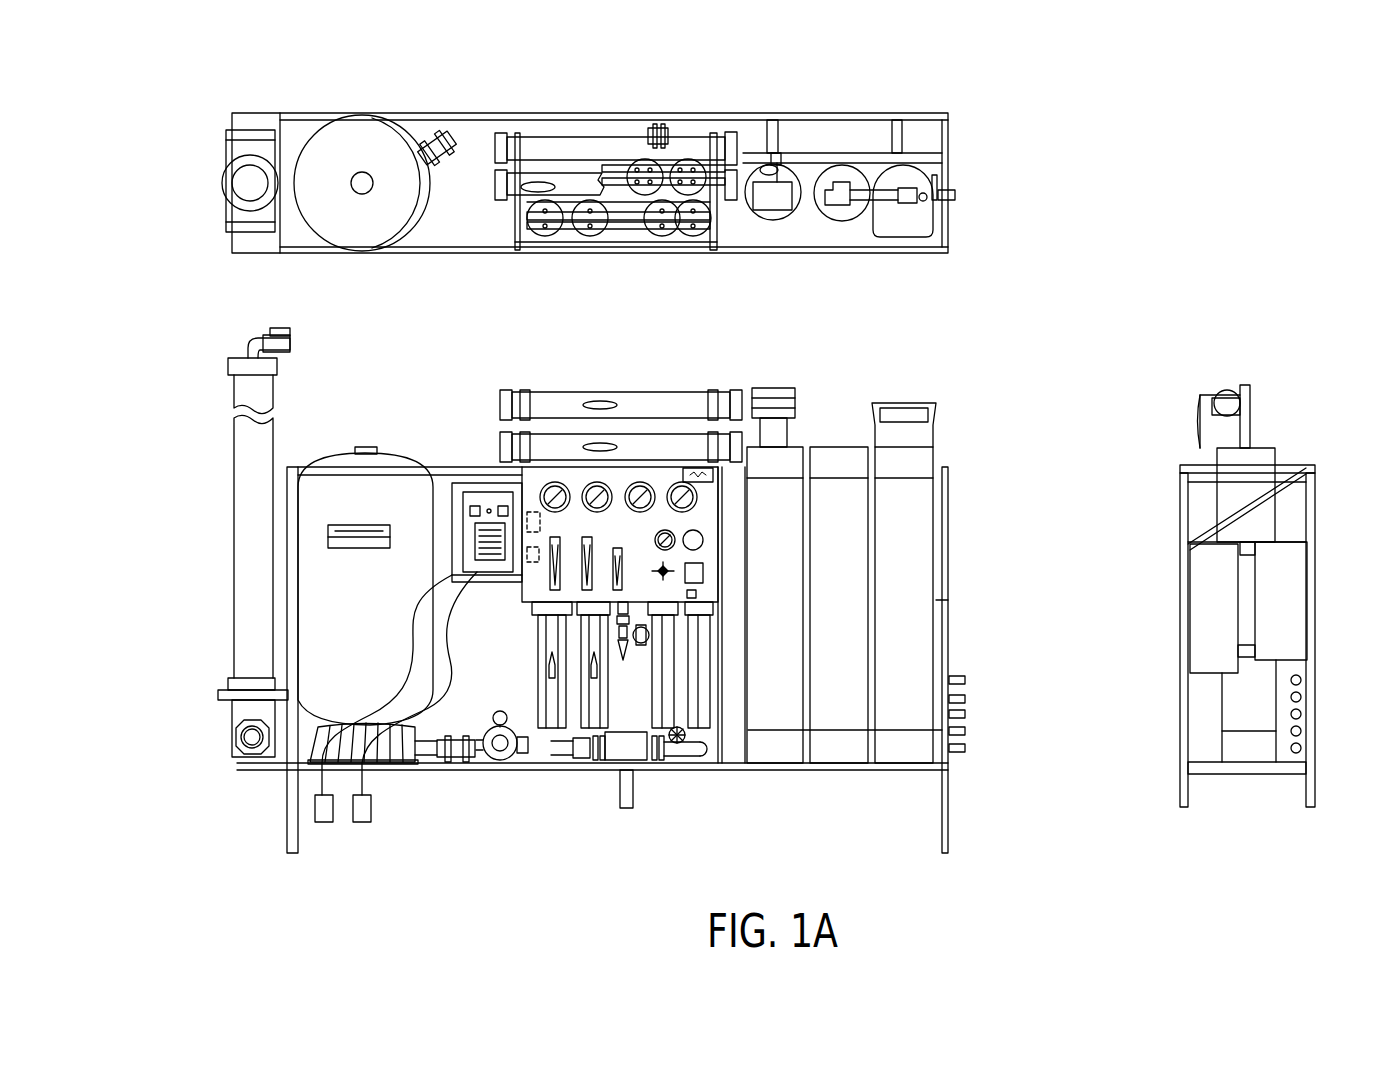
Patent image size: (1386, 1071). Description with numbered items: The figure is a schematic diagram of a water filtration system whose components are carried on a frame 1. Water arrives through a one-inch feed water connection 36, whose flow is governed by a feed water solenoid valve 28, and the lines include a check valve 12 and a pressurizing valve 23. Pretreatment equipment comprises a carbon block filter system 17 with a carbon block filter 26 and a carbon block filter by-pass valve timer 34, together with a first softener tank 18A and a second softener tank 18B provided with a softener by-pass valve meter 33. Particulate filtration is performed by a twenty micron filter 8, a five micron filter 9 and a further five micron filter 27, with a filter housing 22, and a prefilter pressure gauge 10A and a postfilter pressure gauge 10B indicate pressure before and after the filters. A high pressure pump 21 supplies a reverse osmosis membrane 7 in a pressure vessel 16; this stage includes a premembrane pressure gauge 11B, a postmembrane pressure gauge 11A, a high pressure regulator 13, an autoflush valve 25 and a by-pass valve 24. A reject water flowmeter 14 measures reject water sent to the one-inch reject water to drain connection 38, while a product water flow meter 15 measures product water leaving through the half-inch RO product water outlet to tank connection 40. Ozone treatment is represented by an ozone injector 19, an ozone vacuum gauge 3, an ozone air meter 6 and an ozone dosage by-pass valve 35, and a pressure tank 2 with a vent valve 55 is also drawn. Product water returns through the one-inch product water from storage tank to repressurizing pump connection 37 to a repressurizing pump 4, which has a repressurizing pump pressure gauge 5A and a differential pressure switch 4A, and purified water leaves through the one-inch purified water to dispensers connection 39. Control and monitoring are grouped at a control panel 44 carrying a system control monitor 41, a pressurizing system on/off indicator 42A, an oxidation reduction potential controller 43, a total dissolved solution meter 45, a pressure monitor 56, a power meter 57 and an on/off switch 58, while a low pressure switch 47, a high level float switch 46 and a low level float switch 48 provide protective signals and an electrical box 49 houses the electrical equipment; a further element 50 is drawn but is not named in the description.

The frame 1 is at (286, 268).
The pressure tank 2 is at (358, 233).
The ozone vacuum gauge 3 is at (668, 529).
The repressurizing pump 4 is at (497, 762).
The differential pressure switch 4A is at (522, 763).
The repressurizing pump pressure gauge 5A is at (487, 768).
The ozone air meter 6 is at (616, 594).
The reverse osmosis (RO) membrane 7 is at (540, 236).
The 20 micron filter 8 is at (693, 237).
The 5 micron filter 9 is at (662, 237).
The prefilter pressure gauge 10A is at (673, 482).
The postfilter pressure gauge 10B is at (553, 482).
The postmembrane pressure gauge 11A is at (638, 482).
The premembrane pressure gauge 11B is at (595, 482).
The check valve 12 is at (660, 125).
The high pressure regulator 13 is at (656, 570).
The reject water flowmeter 14 is at (554, 588).
The product water flow meter 15 is at (452, 573).
The pressure vessel 16 is at (505, 205).
The carbon block filter system 17 is at (770, 222).
The first softener tank 18A is at (905, 238).
The second softener tank 18B is at (840, 220).
The ozone injector 19 is at (652, 640).
The high pressure pump 21 is at (636, 775).
The filter housing 22 is at (690, 155).
The pressurizing valve 23 is at (442, 170).
The by-pass valve 24 is at (680, 744).
The autoflush valve 25 is at (530, 486).
The carbon block filter 26 is at (546, 237).
The 5 micron filter 27 is at (590, 237).
The feed water solenoid valve 28 is at (628, 672).
The softener by-pass valve meter 33 is at (934, 178).
The carbon block filter by-pass valve timer 34 is at (780, 145).
The ozone dosage by-pass valve 35 is at (232, 362).
The feed water connection 36 is at (968, 678).
The product water from storage tank to repressurizing pump connection 37 is at (968, 699).
The reject water to drain connection 38 is at (968, 714).
The purified water to dispensers connection 39 is at (968, 731).
The RO product water outlet to tank connection 40 is at (968, 748).
The system control monitor 41 is at (474, 540).
The pressurizing system on/off indicator 42A is at (470, 505).
The oxidation reduction potential (ORP) controller 43 is at (468, 528).
The control panel 44 is at (474, 552).
The total dissolved solution (TDS) meter 45 is at (488, 508).
The high level float switch 46 is at (362, 822).
The low pressure switch 47 is at (512, 520).
The low level float switch 48 is at (322, 822).
The electrical box 49 is at (1282, 593).
The side cabinet 50 is at (1185, 613).
The vent valve 55 is at (270, 334).
The pressure monitor 56 is at (702, 533).
The power meter 57 is at (703, 573).
The on/off switch 58 is at (696, 594).